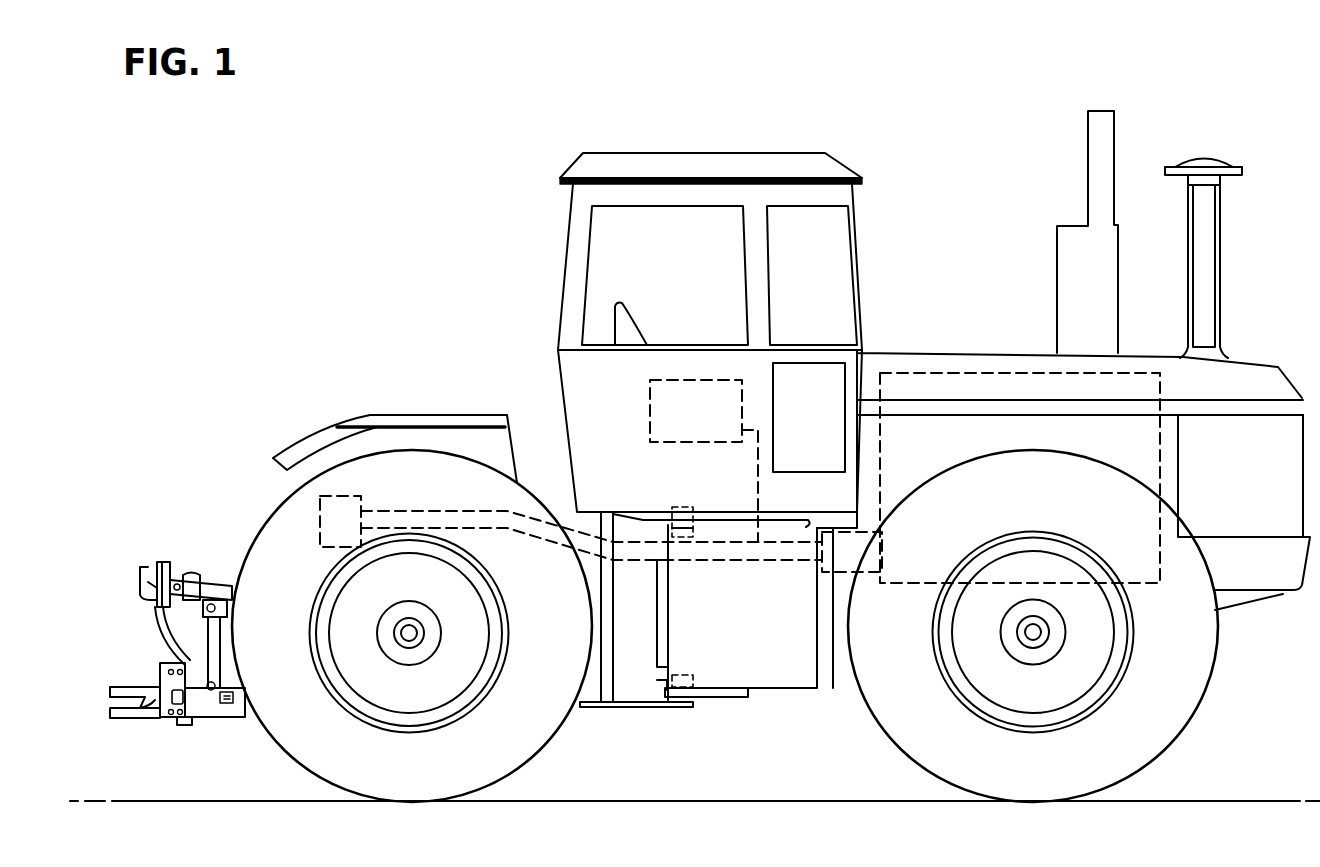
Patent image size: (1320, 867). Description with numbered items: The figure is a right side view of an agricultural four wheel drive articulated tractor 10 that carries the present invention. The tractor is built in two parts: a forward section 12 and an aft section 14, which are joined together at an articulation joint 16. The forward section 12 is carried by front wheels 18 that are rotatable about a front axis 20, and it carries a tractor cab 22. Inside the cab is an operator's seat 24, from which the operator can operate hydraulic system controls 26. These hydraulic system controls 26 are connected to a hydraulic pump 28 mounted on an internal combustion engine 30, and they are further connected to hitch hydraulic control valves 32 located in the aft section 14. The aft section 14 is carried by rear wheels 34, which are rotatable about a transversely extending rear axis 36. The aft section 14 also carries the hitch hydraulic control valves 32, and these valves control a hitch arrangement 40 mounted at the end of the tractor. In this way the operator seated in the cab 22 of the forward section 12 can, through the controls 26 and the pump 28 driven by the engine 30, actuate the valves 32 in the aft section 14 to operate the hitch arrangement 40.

The agricultural four wheel drive articulated tractor 10 is at (910, 132).
The forward section 12 is at (1233, 265).
The aft section 14 is at (355, 263).
The articulation joint 16 is at (713, 705).
The front wheels 18 is at (1205, 720).
The front axis 20 is at (1036, 630).
The tractor cab 22 is at (703, 163).
The operator's seat 24 is at (648, 318).
The hydraulic system controls 26 is at (668, 408).
The hydraulic pump 28 is at (850, 557).
The internal combustion engine 30 is at (937, 387).
The hitch hydraulic control valves 32 is at (335, 505).
The rear wheels 34 is at (572, 740).
The rear axis 36 is at (412, 630).
The hitch arrangement 40 is at (178, 505).